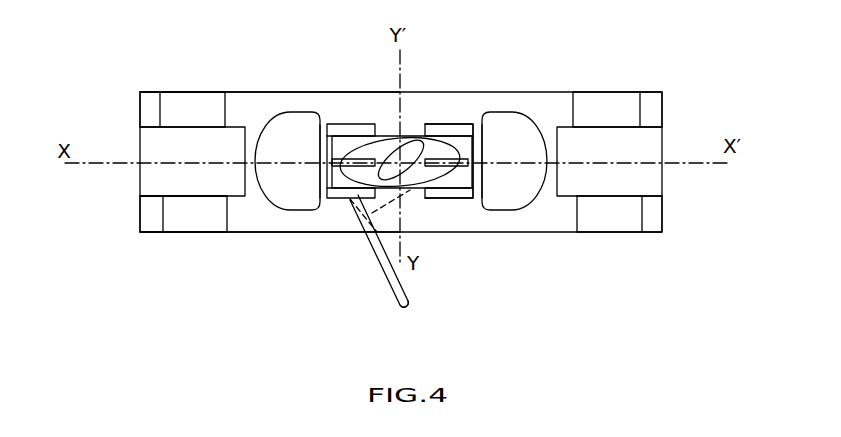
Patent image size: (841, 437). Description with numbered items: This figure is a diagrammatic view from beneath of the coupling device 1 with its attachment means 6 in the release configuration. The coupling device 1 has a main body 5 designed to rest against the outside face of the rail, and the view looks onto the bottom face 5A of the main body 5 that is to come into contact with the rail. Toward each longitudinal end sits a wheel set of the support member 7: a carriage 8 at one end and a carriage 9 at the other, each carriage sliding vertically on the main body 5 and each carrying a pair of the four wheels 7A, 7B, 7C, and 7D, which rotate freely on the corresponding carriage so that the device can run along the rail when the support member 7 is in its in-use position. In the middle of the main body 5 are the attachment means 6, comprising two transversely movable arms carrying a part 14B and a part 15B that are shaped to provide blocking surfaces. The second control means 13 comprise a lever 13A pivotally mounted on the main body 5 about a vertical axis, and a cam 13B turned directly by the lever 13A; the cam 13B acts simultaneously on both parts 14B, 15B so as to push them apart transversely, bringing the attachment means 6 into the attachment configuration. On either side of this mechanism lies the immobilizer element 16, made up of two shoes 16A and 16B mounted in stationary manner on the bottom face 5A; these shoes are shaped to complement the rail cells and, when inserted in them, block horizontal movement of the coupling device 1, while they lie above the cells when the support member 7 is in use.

The coupling device 1 is at (275, 88).
The main body 5 is at (313, 218).
The bottom face 5A is at (240, 104).
The attachment means 6 is at (358, 132).
The support member 7 is at (185, 89).
The wheel 7A is at (176, 222).
The wheel 7B is at (170, 113).
The wheel 7C is at (590, 100).
The wheel 7D is at (590, 217).
The carriage 8 is at (158, 188).
The carriage 9 is at (647, 172).
The second control means 13 is at (386, 284).
The lever 13A is at (410, 303).
The cam 13B is at (410, 148).
The part 14B is at (467, 190).
The part 15B is at (458, 143).
The immobilizer element 16 is at (300, 110).
The shoe 16A is at (287, 195).
The shoe 16B is at (512, 128).